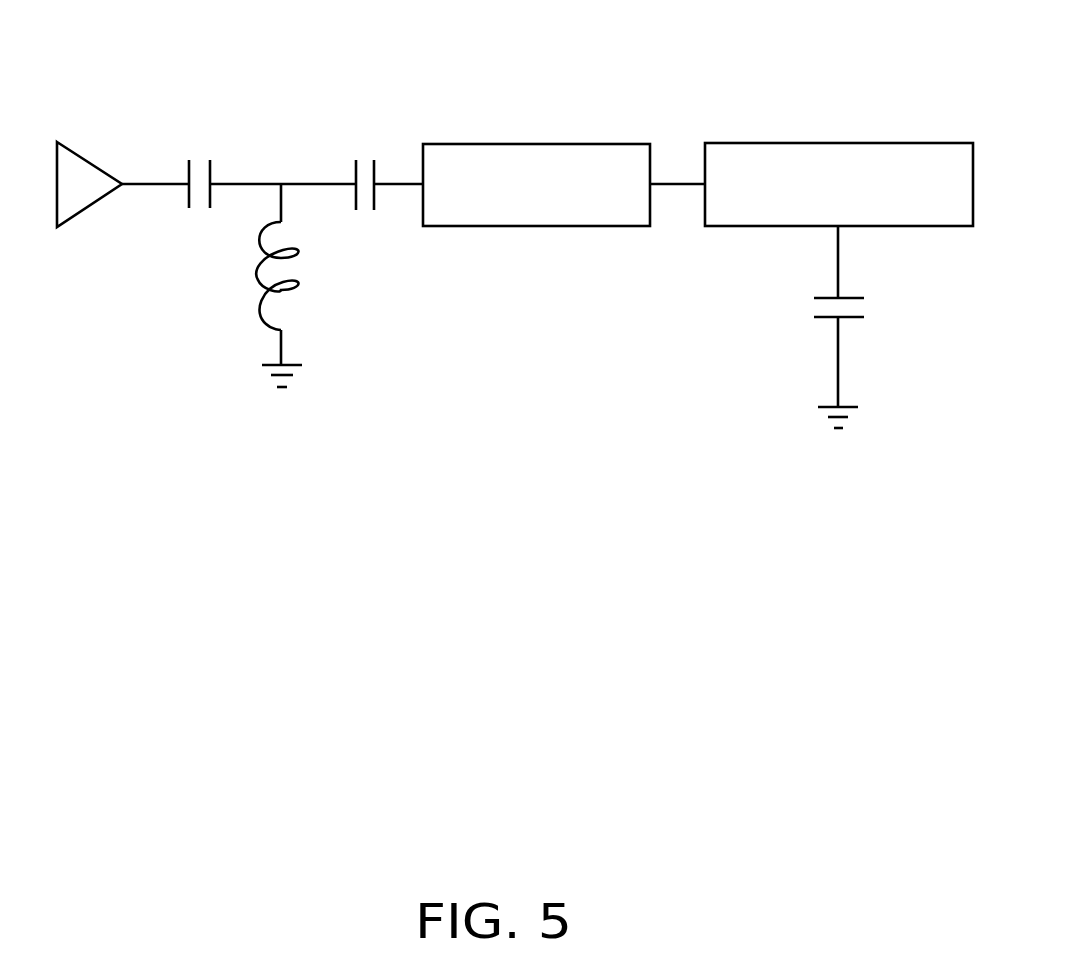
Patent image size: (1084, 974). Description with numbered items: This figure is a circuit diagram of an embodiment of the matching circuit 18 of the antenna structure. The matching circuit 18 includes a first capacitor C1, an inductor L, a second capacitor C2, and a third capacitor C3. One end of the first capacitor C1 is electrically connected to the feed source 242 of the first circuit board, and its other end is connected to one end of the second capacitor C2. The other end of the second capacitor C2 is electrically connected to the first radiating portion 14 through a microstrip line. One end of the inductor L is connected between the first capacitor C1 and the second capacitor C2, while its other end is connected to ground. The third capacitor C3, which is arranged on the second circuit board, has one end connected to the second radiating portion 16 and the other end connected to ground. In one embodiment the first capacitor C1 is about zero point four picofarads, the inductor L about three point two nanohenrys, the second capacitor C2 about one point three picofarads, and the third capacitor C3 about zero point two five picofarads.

The matching circuit 18 is at (420, 86).
The feed source 242 is at (80, 152).
The first capacitor C1 is at (234, 168).
The inductor L is at (306, 285).
The second capacitor C2 is at (387, 169).
The first radiating portion 14 is at (506, 142).
The second radiating portion 16 is at (787, 142).
The third capacitor C3 is at (814, 327).